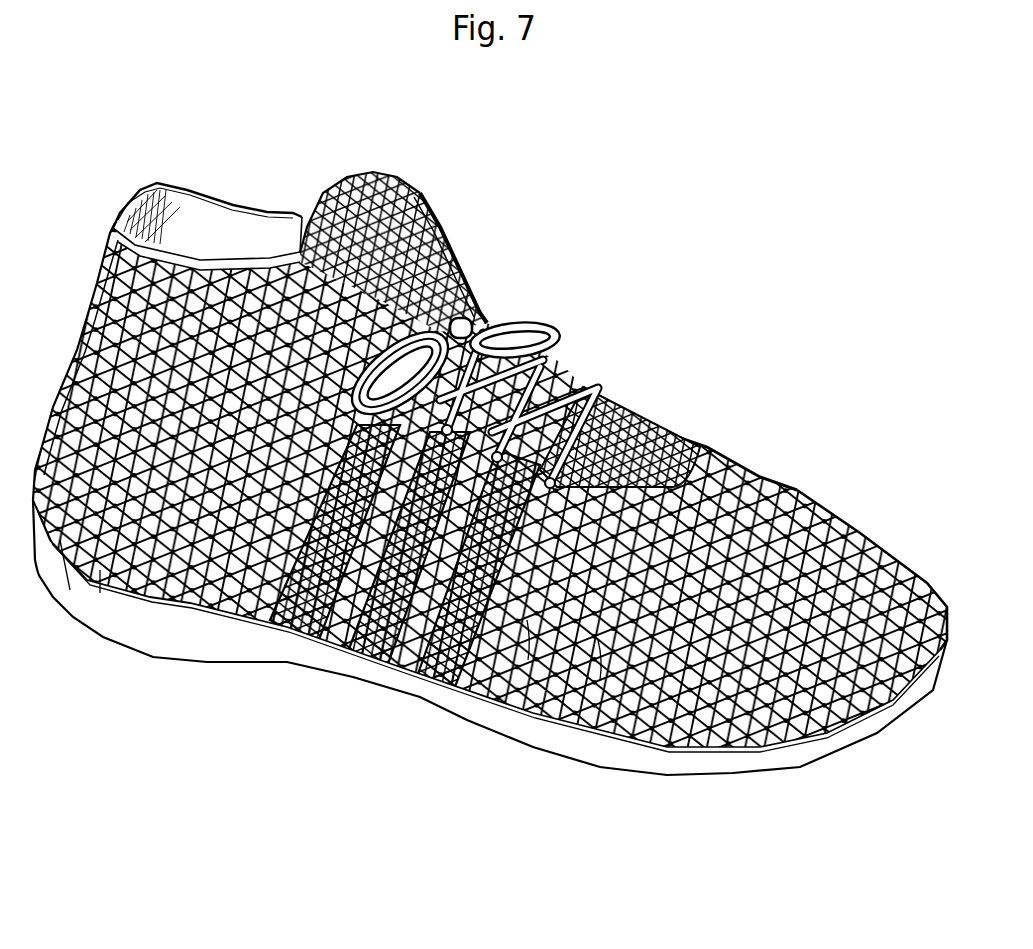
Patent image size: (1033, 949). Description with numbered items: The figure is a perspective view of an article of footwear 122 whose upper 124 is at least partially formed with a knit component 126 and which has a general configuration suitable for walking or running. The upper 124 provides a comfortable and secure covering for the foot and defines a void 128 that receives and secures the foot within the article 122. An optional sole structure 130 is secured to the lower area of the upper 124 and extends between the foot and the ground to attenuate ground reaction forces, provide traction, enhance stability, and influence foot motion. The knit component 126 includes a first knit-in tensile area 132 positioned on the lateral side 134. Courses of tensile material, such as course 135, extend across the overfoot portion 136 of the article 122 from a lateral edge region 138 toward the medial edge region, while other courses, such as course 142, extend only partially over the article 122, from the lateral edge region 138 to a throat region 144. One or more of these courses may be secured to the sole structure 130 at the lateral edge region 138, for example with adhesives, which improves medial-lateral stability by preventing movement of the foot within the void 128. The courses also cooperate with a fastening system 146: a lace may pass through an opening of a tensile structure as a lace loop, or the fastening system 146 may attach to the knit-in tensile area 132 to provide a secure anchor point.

The article of footwear 122 is at (633, 275).
The upper 124 is at (98, 263).
The knit component 126 is at (797, 490).
The void 128 is at (205, 230).
The sole structure 130 is at (693, 767).
The first knit-in tensile area 132 is at (530, 627).
The lateral side 134 is at (600, 653).
The course 135 is at (722, 457).
The overfoot portion 136 is at (762, 476).
The lateral edge region 138 is at (263, 603).
The course 142 is at (112, 620).
The throat region 144 is at (635, 420).
The fastening system 146 is at (310, 630).